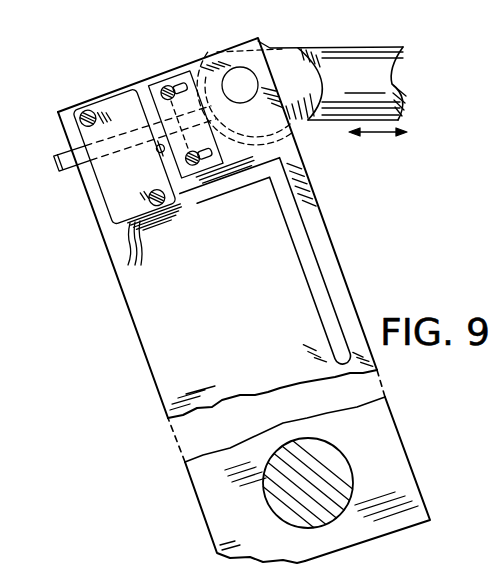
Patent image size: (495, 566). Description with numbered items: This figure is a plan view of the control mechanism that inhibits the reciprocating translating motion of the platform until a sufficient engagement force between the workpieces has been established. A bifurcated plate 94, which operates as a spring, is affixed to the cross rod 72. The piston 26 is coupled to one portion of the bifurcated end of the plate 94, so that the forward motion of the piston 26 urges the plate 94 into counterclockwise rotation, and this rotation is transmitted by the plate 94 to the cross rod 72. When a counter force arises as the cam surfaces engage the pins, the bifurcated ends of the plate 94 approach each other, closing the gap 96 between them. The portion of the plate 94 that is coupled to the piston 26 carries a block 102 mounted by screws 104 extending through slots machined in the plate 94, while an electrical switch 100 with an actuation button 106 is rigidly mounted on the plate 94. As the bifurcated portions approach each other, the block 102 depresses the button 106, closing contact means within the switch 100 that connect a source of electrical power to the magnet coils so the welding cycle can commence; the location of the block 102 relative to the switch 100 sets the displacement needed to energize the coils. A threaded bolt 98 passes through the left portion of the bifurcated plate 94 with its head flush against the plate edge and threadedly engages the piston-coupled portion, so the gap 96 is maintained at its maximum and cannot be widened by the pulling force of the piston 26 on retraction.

The piston 26 is at (377, 86).
The cross rod 72 is at (323, 461).
The bifurcated plate 94 is at (243, 308).
The gap 96 is at (260, 181).
The threaded bolt 98 is at (63, 170).
The electrical switch 100 is at (110, 193).
The block 102 is at (178, 74).
The screws 104 is at (166, 88).
The actuation button 106 is at (163, 154).